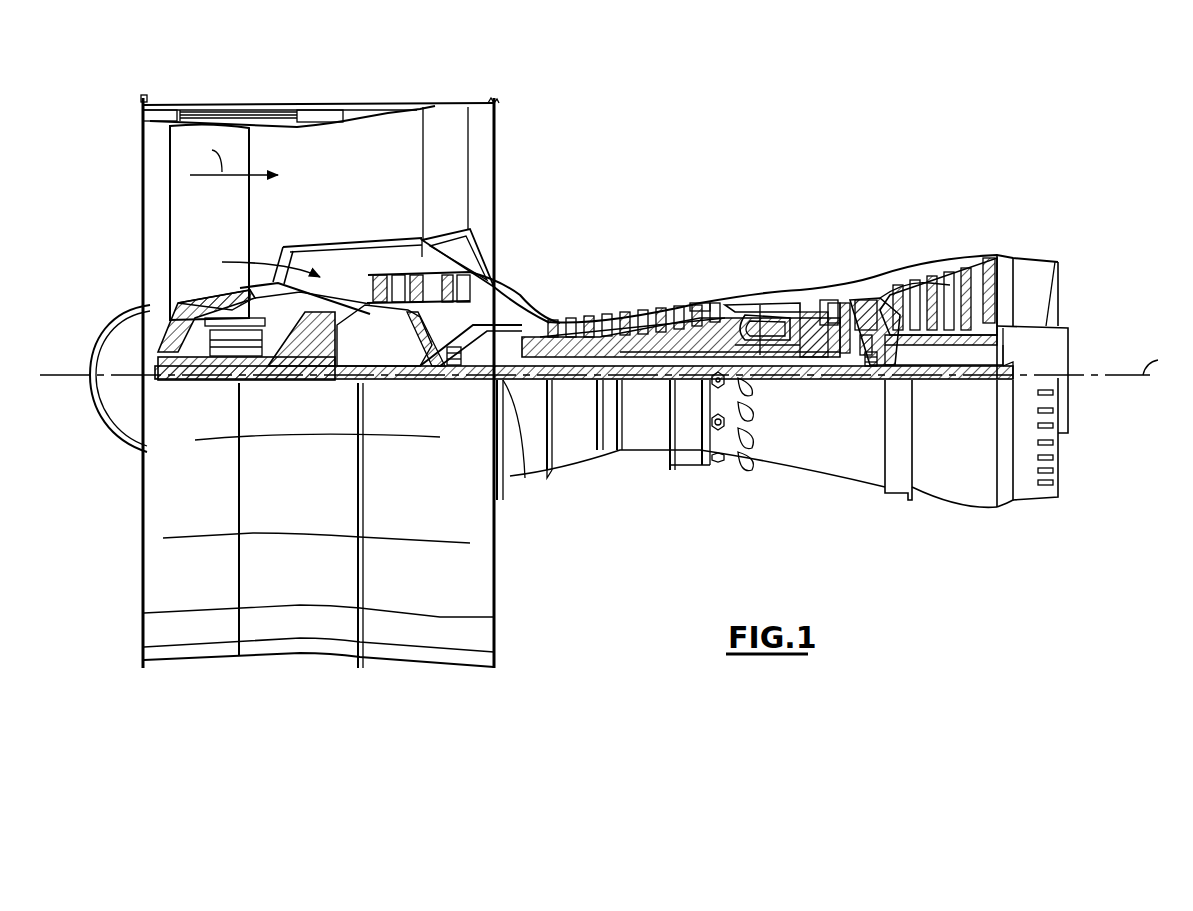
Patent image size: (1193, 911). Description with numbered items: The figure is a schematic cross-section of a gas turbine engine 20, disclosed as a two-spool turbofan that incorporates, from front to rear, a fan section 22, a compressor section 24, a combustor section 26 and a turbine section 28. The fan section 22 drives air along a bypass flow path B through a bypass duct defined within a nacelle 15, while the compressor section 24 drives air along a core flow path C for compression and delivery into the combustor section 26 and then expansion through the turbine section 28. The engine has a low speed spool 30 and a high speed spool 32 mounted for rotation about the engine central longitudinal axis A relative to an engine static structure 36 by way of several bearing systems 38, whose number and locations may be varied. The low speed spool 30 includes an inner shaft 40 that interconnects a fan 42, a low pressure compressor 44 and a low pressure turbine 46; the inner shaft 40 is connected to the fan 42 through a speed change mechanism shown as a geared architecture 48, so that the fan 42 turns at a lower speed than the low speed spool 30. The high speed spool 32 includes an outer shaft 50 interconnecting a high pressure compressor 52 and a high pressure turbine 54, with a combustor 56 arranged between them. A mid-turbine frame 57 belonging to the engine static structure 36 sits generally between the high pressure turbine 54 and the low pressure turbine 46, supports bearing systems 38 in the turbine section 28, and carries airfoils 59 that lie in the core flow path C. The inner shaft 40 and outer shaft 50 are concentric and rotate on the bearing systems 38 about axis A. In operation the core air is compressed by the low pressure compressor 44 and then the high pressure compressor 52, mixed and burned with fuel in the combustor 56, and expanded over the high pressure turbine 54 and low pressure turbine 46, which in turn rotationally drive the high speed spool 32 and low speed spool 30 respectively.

The nacelle 15 is at (318, 108).
The gas turbine engine 20 is at (769, 150).
The fan section 22 is at (250, 96).
The compressor section 24 is at (546, 288).
The combustor section 26 is at (758, 280).
The turbine section 28 is at (902, 246).
The low speed spool 30 is at (647, 388).
The high speed spool 32 is at (690, 340).
The engine static structure 36 is at (688, 468).
The bearing systems 38 is at (452, 372).
The inner shaft 40 is at (510, 385).
The fan 42 is at (222, 226).
The low pressure compressor 44 is at (425, 290).
The low pressure turbine 46 is at (948, 272).
The geared architecture 48 is at (326, 368).
The outer shaft 50 is at (775, 362).
The high pressure compressor 52 is at (630, 322).
The high pressure turbine 54 is at (826, 298).
The combustor 56 is at (760, 325).
The mid-turbine frame 57 is at (870, 290).
The airfoils 59 is at (888, 340).